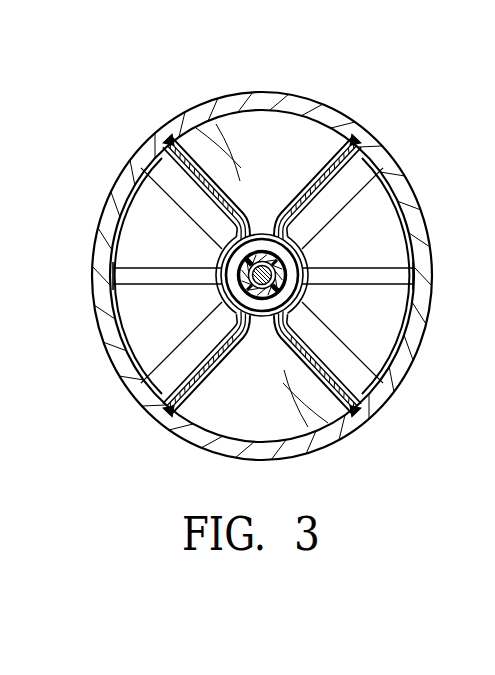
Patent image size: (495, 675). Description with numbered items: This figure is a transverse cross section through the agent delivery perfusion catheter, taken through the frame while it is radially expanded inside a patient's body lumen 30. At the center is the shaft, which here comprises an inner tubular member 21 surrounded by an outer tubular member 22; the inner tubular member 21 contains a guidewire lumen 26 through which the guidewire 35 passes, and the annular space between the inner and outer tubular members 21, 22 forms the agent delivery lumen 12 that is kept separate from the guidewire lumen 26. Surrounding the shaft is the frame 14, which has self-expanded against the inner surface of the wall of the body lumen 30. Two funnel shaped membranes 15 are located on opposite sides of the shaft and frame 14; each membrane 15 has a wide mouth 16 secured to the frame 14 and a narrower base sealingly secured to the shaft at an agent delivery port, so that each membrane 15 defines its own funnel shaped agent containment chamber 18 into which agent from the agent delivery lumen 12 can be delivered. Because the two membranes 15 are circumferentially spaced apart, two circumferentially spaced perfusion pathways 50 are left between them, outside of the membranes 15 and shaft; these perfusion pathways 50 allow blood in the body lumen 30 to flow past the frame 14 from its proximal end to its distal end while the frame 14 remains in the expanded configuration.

The agent delivery lumen 12 is at (235, 287).
The frame 14 is at (143, 268).
The funnel shaped membrane 15 is at (190, 380).
The mouth 16 is at (7, 52).
The agent containment chamber 18 is at (286, 180).
The inner tubular member 21 is at (300, 309).
The outer tubular member 22 is at (296, 294).
The guidewire lumen 26 is at (270, 270).
The body lumen 30 is at (298, 433).
The guidewire 35 is at (155, 163).
The perfusion pathway 50 is at (190, 343).